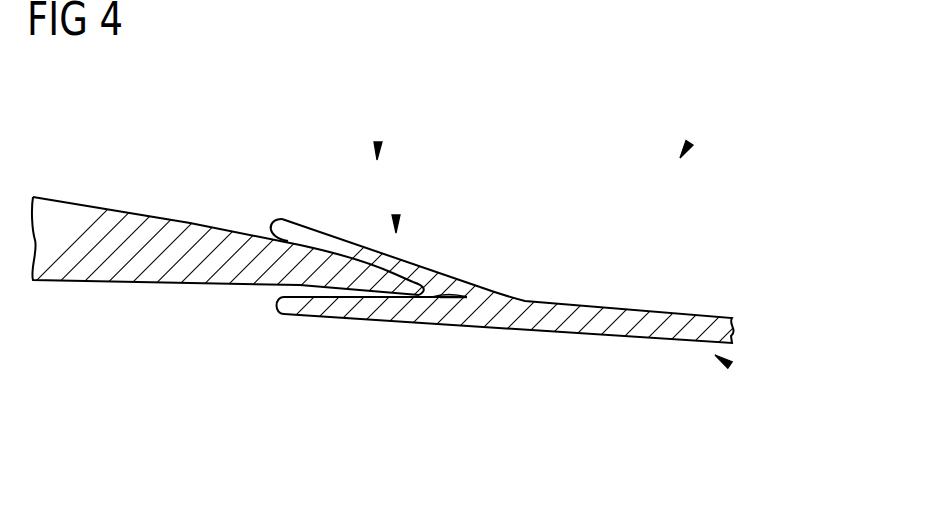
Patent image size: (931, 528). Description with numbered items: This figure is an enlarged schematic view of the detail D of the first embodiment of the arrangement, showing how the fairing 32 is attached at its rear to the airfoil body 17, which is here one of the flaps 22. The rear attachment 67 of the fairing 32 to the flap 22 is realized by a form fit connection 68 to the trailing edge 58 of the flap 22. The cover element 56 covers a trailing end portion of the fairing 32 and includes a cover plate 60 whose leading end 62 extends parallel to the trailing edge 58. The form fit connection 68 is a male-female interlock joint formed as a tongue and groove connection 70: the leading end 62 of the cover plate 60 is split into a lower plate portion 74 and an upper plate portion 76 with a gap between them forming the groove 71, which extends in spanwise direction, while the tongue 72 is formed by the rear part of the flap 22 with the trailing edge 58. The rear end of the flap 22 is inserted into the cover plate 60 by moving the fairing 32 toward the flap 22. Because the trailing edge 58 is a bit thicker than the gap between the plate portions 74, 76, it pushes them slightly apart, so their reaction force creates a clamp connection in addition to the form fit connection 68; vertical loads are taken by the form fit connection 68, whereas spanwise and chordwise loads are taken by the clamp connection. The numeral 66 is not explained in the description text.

The airfoil body 17 is at (279, 271).
The flap 22 is at (279, 271).
The upper plate portion 76 is at (287, 226).
The tongue 72 is at (375, 218).
The trailing edge 58 is at (415, 273).
The leading end 62 is at (396, 215).
The direction indicator 66 is at (378, 142).
The detail D is at (690, 143).
The cover element 56 is at (512, 302).
The cover plate 60 is at (512, 302).
The fairing 32 is at (730, 365).
The lower plate portion 74 is at (297, 307).
The groove 71 is at (354, 339).
The rear attachment 67 is at (512, 302).
The form fit connection 68 is at (512, 302).
The tongue and groove connection 70 is at (512, 302).